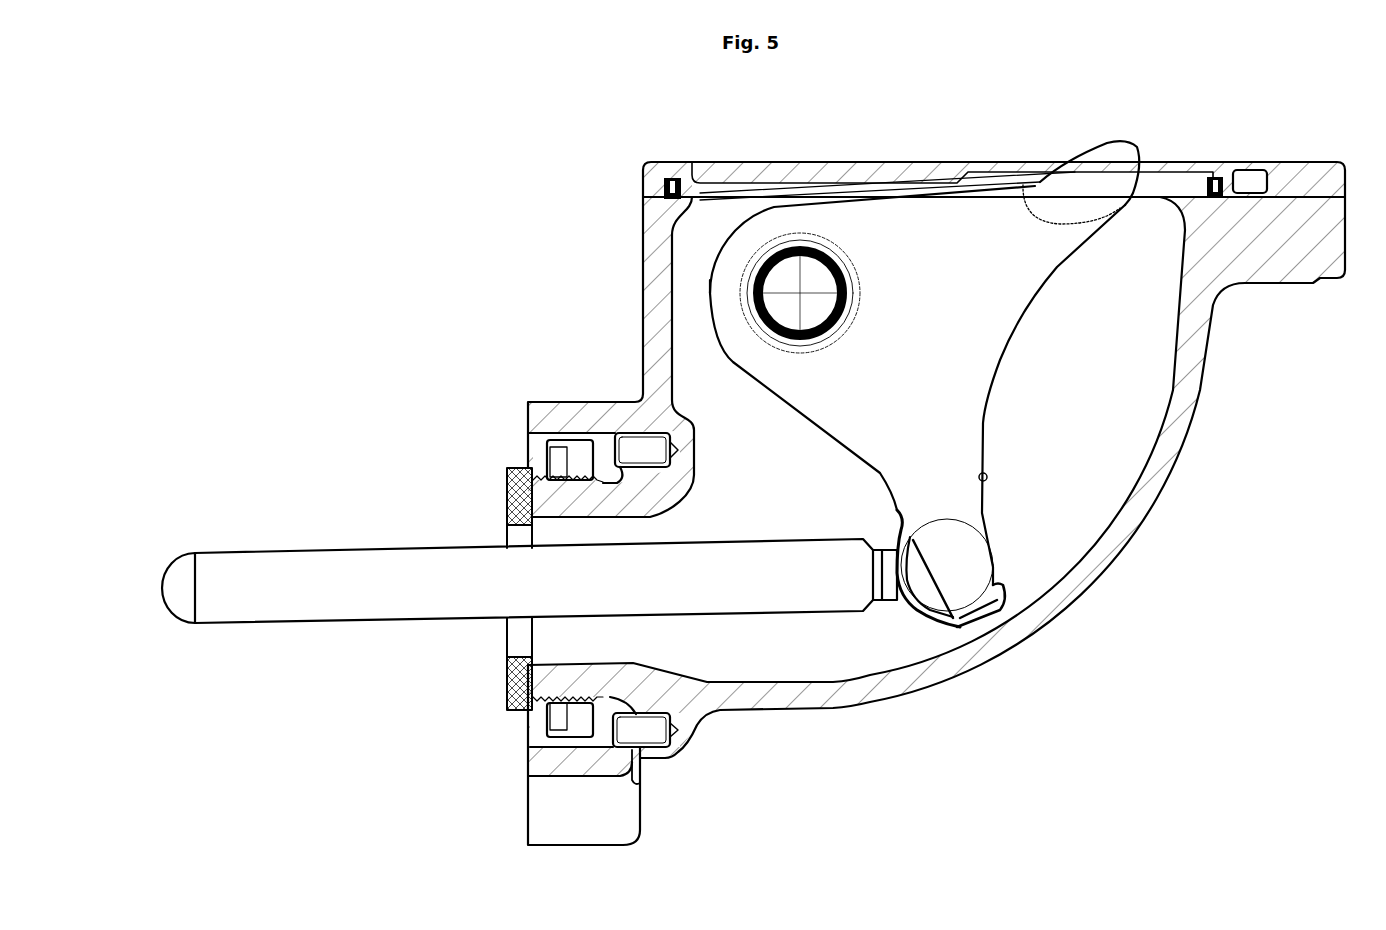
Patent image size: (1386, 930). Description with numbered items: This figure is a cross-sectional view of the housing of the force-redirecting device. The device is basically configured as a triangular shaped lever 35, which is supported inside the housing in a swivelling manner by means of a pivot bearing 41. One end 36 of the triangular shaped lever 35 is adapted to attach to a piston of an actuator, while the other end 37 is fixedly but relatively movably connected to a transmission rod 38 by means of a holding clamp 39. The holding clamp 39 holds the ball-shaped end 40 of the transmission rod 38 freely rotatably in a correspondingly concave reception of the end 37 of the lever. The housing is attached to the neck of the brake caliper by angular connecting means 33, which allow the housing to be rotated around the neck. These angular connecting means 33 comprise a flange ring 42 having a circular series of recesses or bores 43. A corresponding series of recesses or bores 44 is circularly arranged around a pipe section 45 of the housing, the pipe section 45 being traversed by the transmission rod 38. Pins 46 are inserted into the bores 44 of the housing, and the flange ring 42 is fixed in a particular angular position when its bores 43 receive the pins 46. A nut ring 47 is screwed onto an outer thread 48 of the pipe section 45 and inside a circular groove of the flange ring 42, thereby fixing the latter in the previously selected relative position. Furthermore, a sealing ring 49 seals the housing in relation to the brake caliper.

The angular connecting means 33 is at (568, 355).
The triangular shaped lever 35 is at (935, 383).
The one end of the triangular shaped lever 36 is at (1097, 177).
The other end of the triangular shaped lever 37 is at (963, 567).
The transmission rod 38 is at (223, 598).
The holding clamp 39 is at (955, 620).
The ball-shaped end 40 is at (917, 583).
The pivot bearing 41 is at (812, 293).
The flange ring 42 is at (547, 757).
The recesses or bores 43 is at (633, 752).
The recesses or bores 44 is at (678, 730).
The pipe section 45 is at (597, 680).
The pins 46 is at (647, 450).
The nut ring 47 is at (580, 457).
The outer thread 48 is at (507, 490).
The sealing ring 49 is at (507, 664).